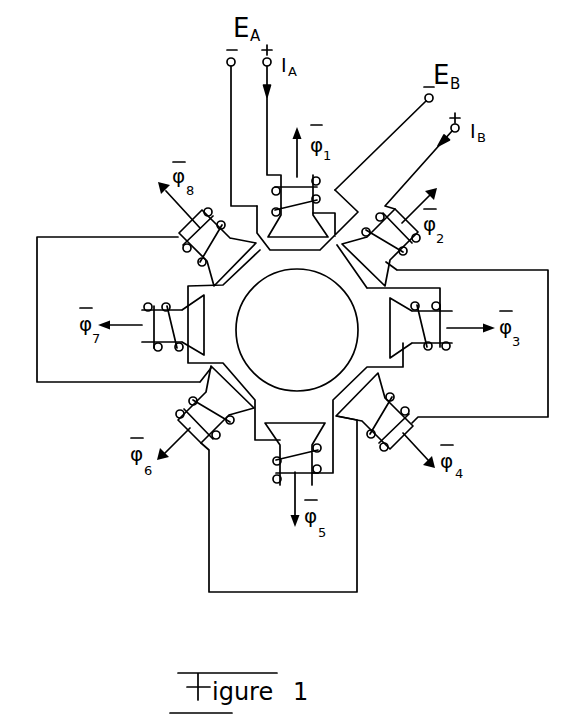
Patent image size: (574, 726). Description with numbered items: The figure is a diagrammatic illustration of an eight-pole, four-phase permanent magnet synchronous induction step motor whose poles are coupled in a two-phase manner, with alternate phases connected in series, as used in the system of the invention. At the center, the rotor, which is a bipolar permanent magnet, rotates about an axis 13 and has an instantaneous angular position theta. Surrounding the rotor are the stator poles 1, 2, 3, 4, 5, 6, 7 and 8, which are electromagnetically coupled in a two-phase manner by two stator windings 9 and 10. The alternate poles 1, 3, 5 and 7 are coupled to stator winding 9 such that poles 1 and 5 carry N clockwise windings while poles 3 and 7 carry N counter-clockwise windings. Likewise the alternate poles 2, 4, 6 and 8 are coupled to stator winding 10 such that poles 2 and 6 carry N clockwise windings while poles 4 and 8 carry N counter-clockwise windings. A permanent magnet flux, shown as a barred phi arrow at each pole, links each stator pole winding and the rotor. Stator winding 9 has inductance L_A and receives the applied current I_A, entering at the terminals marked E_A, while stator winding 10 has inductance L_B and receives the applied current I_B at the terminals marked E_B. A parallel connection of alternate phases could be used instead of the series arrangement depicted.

The stator pole 1 is at (314, 181).
The stator pole 2 is at (404, 250).
The stator pole 3 is at (438, 346).
The stator pole 4 is at (384, 450).
The stator pole 5 is at (313, 478).
The stator pole 6 is at (205, 438).
The stator pole 7 is at (152, 355).
The stator pole 8 is at (181, 241).
The stator winding 9 is at (269, 108).
The stator winding 10 is at (432, 152).
The axis 13 is at (300, 313).